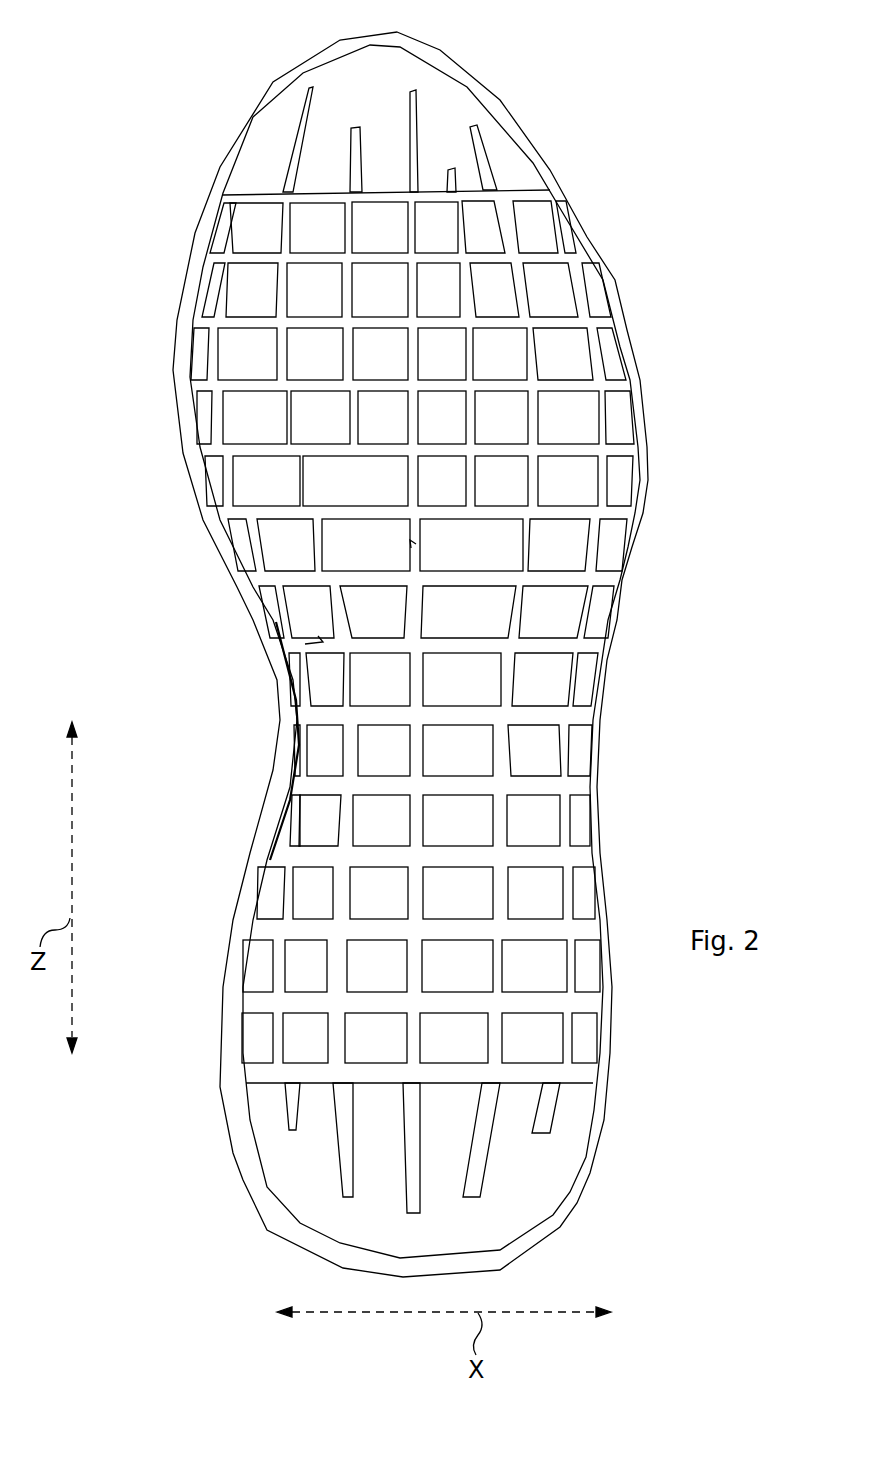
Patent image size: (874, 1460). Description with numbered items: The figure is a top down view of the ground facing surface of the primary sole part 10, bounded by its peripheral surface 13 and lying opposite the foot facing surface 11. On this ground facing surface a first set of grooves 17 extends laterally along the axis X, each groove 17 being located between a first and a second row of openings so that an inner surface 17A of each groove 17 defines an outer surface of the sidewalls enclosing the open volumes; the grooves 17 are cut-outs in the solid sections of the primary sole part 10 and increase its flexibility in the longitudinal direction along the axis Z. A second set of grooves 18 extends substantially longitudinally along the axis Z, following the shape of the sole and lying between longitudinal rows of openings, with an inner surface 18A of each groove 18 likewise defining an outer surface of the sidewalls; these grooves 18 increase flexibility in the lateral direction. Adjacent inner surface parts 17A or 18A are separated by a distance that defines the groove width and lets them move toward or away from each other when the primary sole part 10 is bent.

The primary sole part 10 is at (446, 641).
The foot facing surface 11 is at (397, 99).
The peripheral surface 13 is at (636, 516).
The first set of grooves 17 is at (297, 716).
The inner surface of groove 17A is at (305, 644).
The second set of grooves 18 is at (503, 694).
The inner surface of groove 18A is at (416, 544).